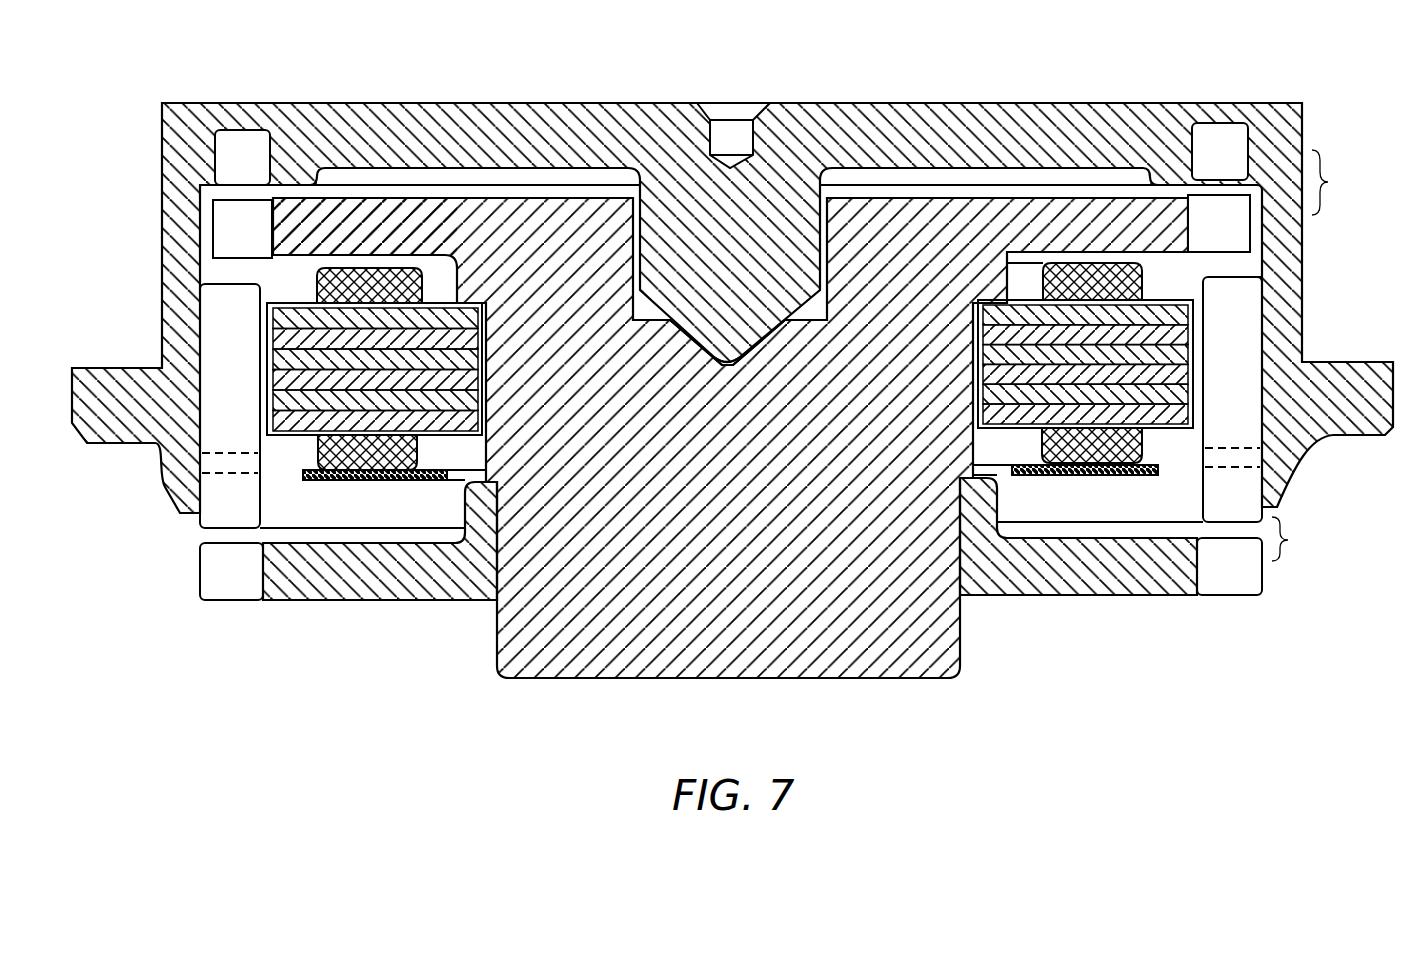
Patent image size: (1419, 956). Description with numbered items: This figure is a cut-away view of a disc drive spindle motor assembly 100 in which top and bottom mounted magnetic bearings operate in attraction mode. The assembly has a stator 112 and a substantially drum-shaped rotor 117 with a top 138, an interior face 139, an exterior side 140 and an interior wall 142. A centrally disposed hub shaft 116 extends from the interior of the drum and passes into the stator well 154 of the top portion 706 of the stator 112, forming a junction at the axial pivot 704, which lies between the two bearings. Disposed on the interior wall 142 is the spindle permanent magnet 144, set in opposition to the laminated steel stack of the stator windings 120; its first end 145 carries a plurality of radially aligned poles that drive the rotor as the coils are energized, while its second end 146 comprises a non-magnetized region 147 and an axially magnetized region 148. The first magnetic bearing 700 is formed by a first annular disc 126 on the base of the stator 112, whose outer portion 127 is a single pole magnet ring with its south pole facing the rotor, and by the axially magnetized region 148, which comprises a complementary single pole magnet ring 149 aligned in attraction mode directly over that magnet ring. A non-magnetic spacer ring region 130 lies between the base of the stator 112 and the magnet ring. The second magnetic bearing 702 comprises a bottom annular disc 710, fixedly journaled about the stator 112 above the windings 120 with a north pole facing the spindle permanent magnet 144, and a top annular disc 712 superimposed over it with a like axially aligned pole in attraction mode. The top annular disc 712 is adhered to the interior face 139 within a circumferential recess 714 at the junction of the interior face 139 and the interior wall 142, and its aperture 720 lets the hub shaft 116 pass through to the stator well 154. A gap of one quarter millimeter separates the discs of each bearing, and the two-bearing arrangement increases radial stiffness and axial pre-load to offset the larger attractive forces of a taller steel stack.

The spindle motor assembly 100 is at (738, 368).
The stator 112 is at (950, 658).
The hub shaft 116 is at (700, 290).
The rotor 117 is at (932, 135).
The stator windings 120 is at (1163, 300).
The first annular disc 126 is at (1090, 597).
The outer portion 127 is at (1262, 596).
The non-magnetic spacer ring region 130 is at (362, 577).
The top 138 is at (1100, 100).
The interior face 139 is at (975, 180).
The exterior side 140 is at (1303, 302).
The interior wall 142 is at (1265, 242).
The spindle permanent magnet 144 is at (1230, 390).
The first end 145 is at (1262, 283).
The second end 146 is at (1213, 523).
The non-magnetized region 147 is at (1233, 458).
The axially magnetized region 148 is at (200, 527).
The complementary single pole magnet ring 149 is at (223, 500).
The stator well 154 is at (636, 240).
The first magnetic bearing 700 is at (1288, 540).
The second magnetic bearing 702 is at (1328, 182).
The axial pivot 704 is at (727, 365).
The top portion 706 is at (400, 195).
The bottom annular disc 710 is at (215, 235).
The top annular disc 712 is at (231, 128).
The recess 714 is at (195, 150).
The aperture 720 is at (270, 165).